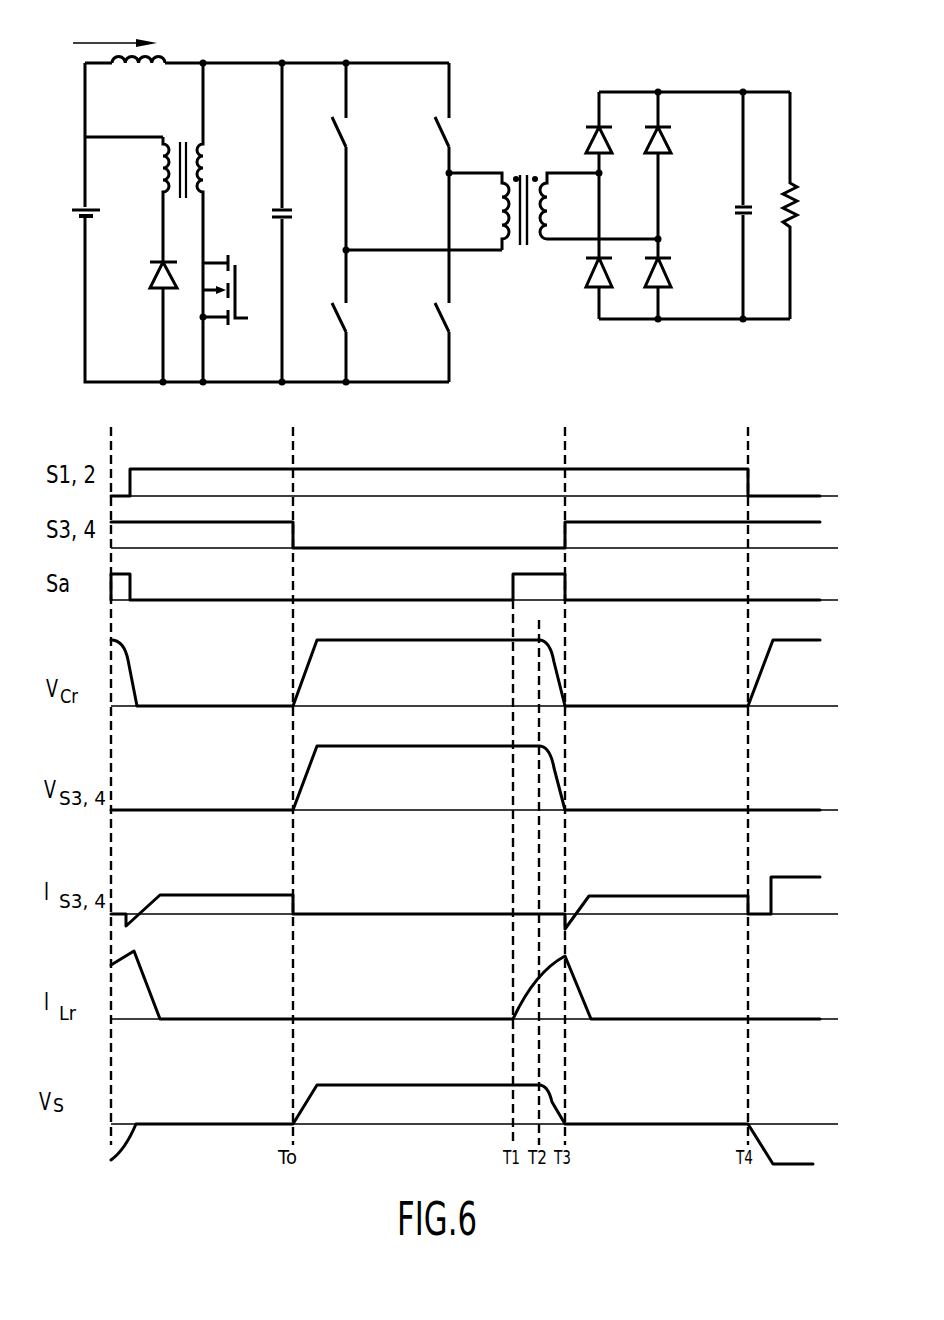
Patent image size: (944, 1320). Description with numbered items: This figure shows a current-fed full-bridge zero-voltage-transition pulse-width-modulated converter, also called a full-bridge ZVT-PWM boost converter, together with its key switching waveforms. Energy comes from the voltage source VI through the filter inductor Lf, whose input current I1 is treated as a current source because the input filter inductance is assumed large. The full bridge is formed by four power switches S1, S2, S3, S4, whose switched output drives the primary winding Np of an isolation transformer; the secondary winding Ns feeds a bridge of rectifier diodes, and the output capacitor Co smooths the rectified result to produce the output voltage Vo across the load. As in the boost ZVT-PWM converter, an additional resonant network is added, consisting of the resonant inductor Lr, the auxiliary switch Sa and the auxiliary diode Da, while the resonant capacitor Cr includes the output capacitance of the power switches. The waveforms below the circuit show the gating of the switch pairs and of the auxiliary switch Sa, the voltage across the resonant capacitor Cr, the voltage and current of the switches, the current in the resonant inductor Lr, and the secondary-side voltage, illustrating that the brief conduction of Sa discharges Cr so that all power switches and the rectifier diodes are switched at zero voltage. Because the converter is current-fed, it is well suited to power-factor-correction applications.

The input current I1 is at (115, 27).
The filter inductor Lf is at (150, 46).
The resonant inductor Lr is at (183, 163).
The voltage source VI is at (73, 198).
The auxiliary diode Da is at (150, 322).
The auxiliary switch Sa is at (224, 318).
The resonant capacitor Cr is at (294, 201).
The power switch S1 is at (352, 156).
The power switch S2 is at (459, 316).
The power switch S3 is at (459, 156).
The power switch S4 is at (353, 316).
The primary winding Np is at (493, 211).
The secondary winding Ns is at (599, 206).
The output capacitor Co is at (732, 205).
The output voltage Vo is at (807, 205).